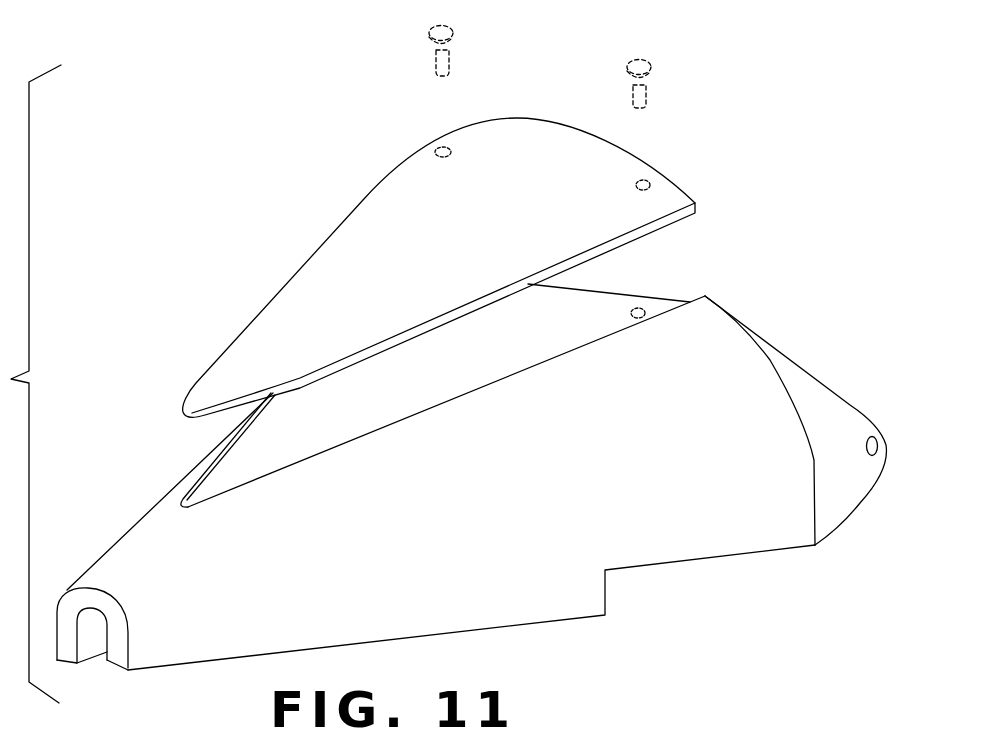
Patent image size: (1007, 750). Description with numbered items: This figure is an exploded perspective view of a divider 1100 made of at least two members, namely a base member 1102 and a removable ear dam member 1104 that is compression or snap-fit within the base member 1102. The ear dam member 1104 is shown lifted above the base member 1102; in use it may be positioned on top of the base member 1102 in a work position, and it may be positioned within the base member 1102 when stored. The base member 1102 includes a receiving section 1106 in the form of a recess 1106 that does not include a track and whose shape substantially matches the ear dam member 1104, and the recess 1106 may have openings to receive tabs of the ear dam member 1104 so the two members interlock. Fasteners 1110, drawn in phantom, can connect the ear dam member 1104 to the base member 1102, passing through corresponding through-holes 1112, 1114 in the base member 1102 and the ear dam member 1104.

The divider 1100 is at (213, 289).
The base member 1102 is at (487, 553).
The ear dam member 1104 is at (366, 237).
The receiving section 1106 is at (240, 463).
The fasteners 1110 is at (430, 40).
The through-hole 1112 is at (642, 309).
The through-hole 1114 is at (643, 181).